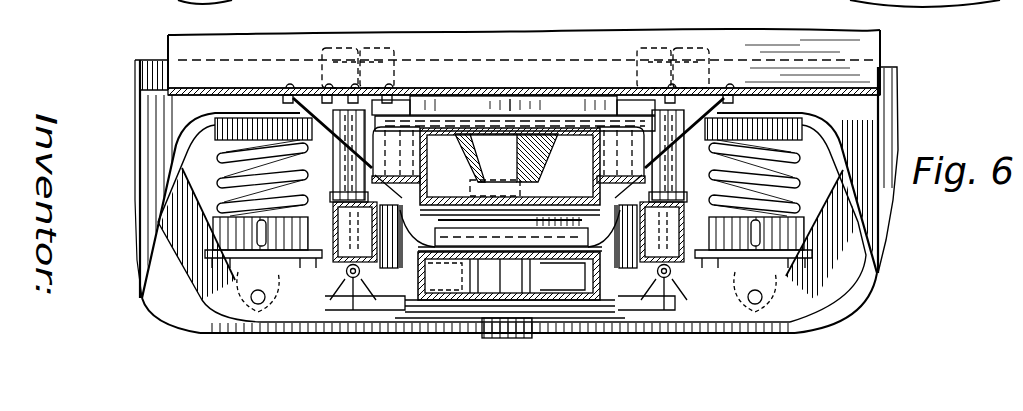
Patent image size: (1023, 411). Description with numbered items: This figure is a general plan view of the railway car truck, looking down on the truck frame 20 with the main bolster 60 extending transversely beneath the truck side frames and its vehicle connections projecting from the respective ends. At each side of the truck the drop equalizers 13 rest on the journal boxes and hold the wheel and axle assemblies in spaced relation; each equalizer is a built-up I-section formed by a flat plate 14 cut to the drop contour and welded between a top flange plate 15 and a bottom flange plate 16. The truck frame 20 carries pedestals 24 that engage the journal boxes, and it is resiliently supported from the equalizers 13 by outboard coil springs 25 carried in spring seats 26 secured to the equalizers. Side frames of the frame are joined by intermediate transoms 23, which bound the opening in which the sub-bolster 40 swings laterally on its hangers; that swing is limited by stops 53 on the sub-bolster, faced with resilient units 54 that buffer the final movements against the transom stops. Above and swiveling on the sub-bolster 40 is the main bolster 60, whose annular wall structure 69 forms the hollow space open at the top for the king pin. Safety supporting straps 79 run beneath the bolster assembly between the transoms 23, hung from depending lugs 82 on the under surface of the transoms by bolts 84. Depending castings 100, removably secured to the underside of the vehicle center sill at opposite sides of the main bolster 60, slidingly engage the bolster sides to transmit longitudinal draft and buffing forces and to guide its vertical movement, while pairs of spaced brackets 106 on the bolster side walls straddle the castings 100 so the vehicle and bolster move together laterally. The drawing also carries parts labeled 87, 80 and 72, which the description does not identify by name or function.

The body bolster / side sill 87 is at (642, 30).
The truck frame 20 is at (902, 88).
The castings 100 is at (375, 95).
The brackets 106 is at (392, 134).
The equalizers 13 is at (850, 296).
The flat plate 14 is at (192, 300).
The bottom flange plate 16 is at (168, 290).
The pedestals 24 is at (142, 158).
The top flange plate 15 is at (182, 212).
The coil springs 25 is at (228, 160).
The intermediate transoms 23 is at (335, 192).
The depending lugs 82 is at (335, 242).
The bolts 84 is at (698, 250).
The bolt 80 is at (345, 283).
The spring seats 26 is at (285, 285).
The main bolster 60 is at (442, 110).
The annular wall structure 69 is at (540, 158).
The stops 53 is at (687, 290).
The safety supporting straps 79 is at (445, 277).
The lower bolster member 72 is at (555, 290).
The sub-bolster 40 is at (533, 306).
The resilient units 54 is at (676, 306).